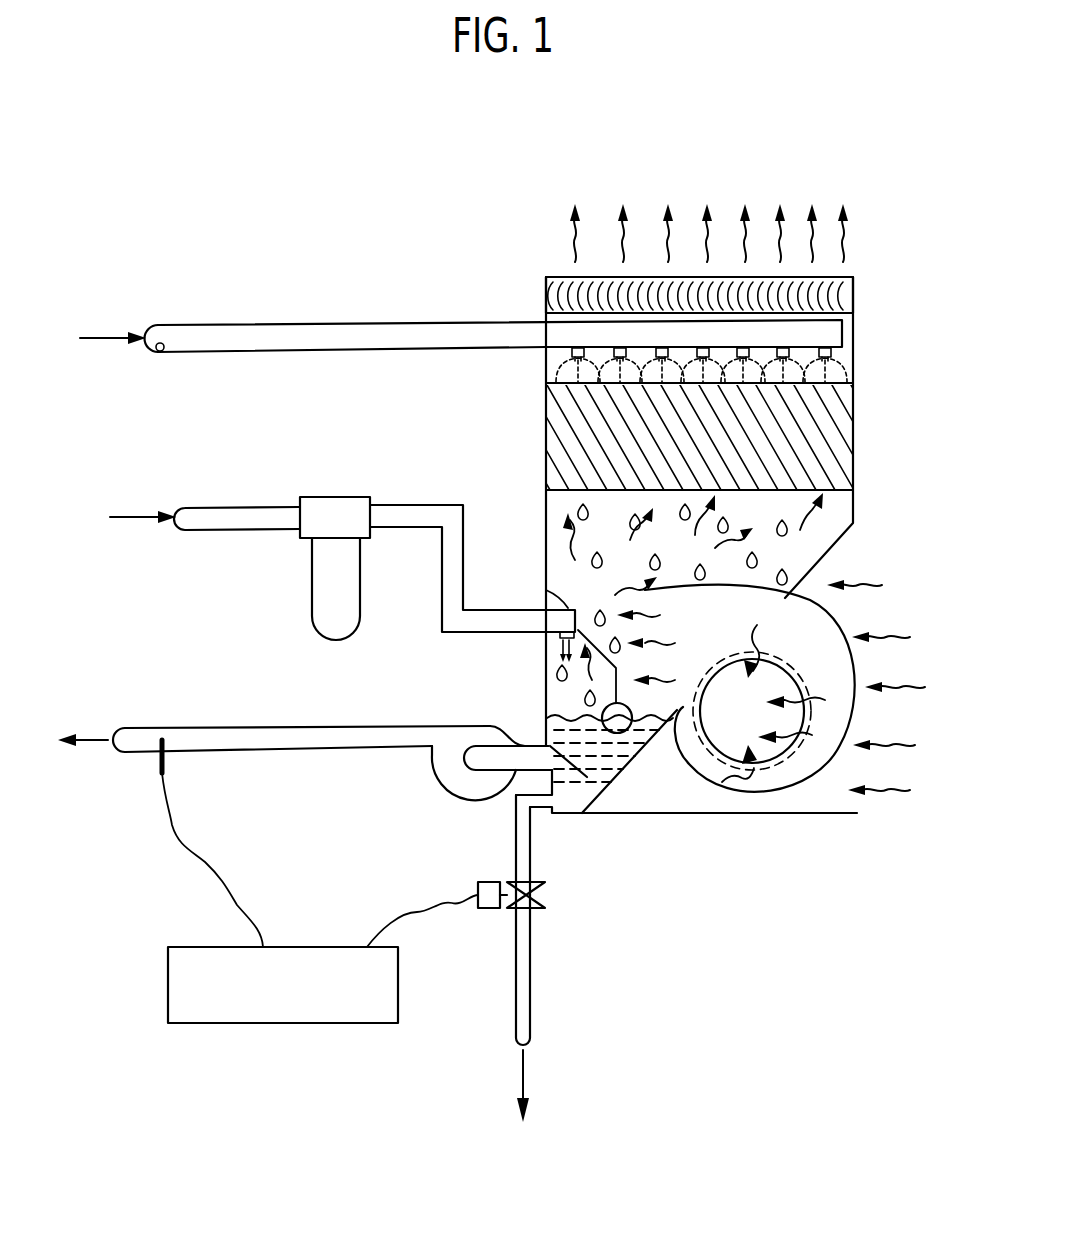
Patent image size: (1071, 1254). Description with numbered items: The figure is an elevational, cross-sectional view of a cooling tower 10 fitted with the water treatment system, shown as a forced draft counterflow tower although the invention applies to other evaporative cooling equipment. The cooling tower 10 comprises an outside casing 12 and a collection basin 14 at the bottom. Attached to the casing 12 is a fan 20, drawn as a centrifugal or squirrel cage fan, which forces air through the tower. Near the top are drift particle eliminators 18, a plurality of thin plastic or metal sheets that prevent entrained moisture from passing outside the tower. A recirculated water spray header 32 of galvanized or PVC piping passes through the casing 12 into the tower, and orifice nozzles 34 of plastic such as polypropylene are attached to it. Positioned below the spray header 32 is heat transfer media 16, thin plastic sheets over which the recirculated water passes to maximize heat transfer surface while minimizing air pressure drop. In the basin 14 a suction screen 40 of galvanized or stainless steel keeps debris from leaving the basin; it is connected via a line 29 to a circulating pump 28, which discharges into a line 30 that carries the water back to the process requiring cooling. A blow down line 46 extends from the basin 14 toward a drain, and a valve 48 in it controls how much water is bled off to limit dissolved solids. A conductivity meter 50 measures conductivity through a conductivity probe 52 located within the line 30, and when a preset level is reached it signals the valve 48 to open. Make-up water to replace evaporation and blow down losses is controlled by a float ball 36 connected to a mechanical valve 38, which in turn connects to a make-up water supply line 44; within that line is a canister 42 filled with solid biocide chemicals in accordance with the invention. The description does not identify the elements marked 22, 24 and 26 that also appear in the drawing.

The cooling tower 10 is at (405, 270).
The outside casing 12 is at (547, 437).
The collection basin 14 is at (546, 648).
The heat transfer media 16 is at (835, 440).
The drift particle eliminators 18 is at (846, 290).
The fan 20 is at (833, 672).
The water supply pipe 22 is at (193, 326).
The spray 24 is at (546, 365).
The sump 26 is at (604, 770).
The circulating pump 28 is at (455, 762).
The line 29 is at (516, 740).
The line 30 is at (165, 730).
The recirculated water spray header 32 is at (833, 335).
The orifice nozzles 34 is at (852, 349).
The float ball 36 is at (602, 714).
The mechanical valve 38 is at (560, 603).
The suction screen 40 is at (552, 772).
The canister 42 is at (312, 580).
The make-up water supply line 44 is at (440, 603).
The blow down line 46 is at (530, 845).
The valve 48 is at (548, 895).
The conductivity meter 50 is at (278, 1023).
The conductivity probe 52 is at (155, 765).